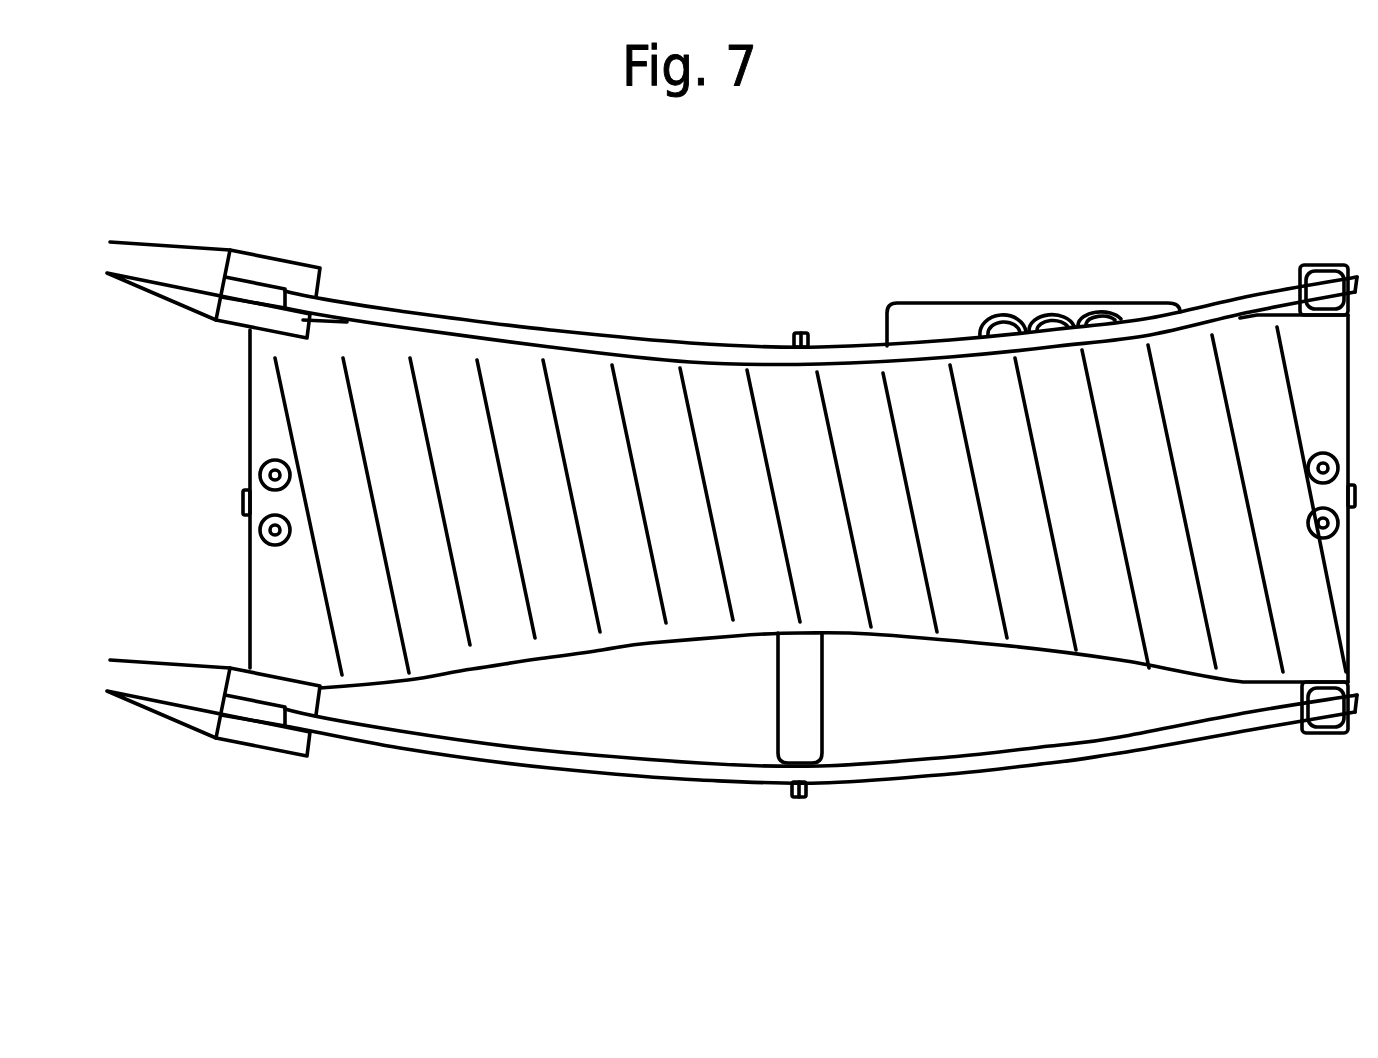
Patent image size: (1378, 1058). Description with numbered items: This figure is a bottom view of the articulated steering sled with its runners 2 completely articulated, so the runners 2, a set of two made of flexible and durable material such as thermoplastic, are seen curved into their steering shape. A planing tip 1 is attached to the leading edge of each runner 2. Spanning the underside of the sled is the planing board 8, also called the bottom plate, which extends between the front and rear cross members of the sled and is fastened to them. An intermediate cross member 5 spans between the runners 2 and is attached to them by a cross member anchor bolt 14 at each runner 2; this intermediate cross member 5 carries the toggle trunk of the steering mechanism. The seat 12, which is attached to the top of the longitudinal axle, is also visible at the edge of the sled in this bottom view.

The planing tip 1 is at (153, 240).
The runner 2 is at (574, 333).
The intermediate cross member 5 is at (823, 698).
The planing board 8 is at (799, 499).
The seat 12 is at (965, 303).
The cross member anchor bolt 14 is at (801, 333).